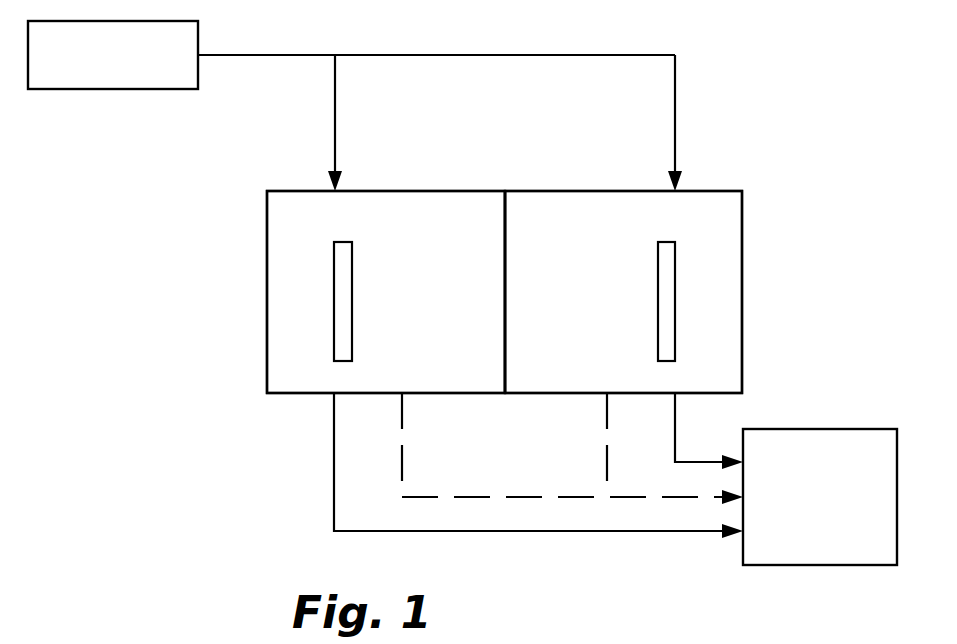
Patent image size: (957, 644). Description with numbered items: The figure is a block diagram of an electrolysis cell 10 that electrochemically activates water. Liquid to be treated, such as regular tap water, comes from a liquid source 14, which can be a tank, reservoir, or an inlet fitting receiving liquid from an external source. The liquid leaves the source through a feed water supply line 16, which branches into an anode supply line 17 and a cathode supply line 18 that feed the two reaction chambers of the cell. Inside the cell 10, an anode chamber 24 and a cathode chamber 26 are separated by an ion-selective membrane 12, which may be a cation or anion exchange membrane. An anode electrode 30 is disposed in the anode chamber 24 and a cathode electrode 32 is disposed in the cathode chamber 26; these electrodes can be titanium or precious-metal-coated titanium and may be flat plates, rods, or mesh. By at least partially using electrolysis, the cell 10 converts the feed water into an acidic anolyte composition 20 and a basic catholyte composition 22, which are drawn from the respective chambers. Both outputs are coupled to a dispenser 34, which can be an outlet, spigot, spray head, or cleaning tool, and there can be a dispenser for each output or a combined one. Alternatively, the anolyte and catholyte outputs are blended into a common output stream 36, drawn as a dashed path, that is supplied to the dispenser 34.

The electrolysis cell 10 is at (238, 320).
The ion-selective membrane 12 is at (505, 335).
The liquid source 14 is at (112, 90).
The feed water supply line 16 is at (247, 55).
The anode supply line 17 is at (335, 124).
The cathode supply line 18 is at (675, 124).
The acidic anolyte composition 20 is at (692, 531).
The basic catholyte composition 22 is at (692, 462).
The anode chamber 24 is at (436, 374).
The cathode chamber 26 is at (581, 374).
The anode electrode 30 is at (353, 293).
The cathode electrode 32 is at (657, 293).
The dispenser 34 is at (810, 429).
The common output stream 36 is at (660, 495).